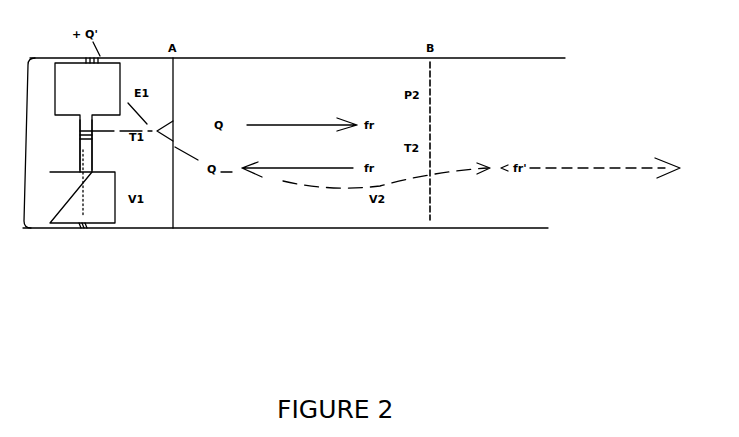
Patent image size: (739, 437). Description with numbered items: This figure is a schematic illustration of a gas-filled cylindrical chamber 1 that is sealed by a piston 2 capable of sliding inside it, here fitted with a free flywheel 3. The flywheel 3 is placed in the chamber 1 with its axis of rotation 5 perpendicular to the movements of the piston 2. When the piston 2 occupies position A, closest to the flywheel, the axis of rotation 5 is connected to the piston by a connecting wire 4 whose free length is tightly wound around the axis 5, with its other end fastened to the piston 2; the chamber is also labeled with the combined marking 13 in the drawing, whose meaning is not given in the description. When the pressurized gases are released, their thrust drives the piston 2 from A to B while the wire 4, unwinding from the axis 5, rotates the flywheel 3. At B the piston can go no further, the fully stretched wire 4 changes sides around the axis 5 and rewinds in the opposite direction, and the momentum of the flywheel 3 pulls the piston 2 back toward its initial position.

The cylindrical chamber 1 is at (437, 58).
The piston 2 is at (175, 180).
The free flywheel 3 is at (92, 93).
The connecting wire 4 is at (173, 121).
The axis of rotation of the flywheel 5 is at (85, 230).
The connecting neck 13 is at (88, 152).